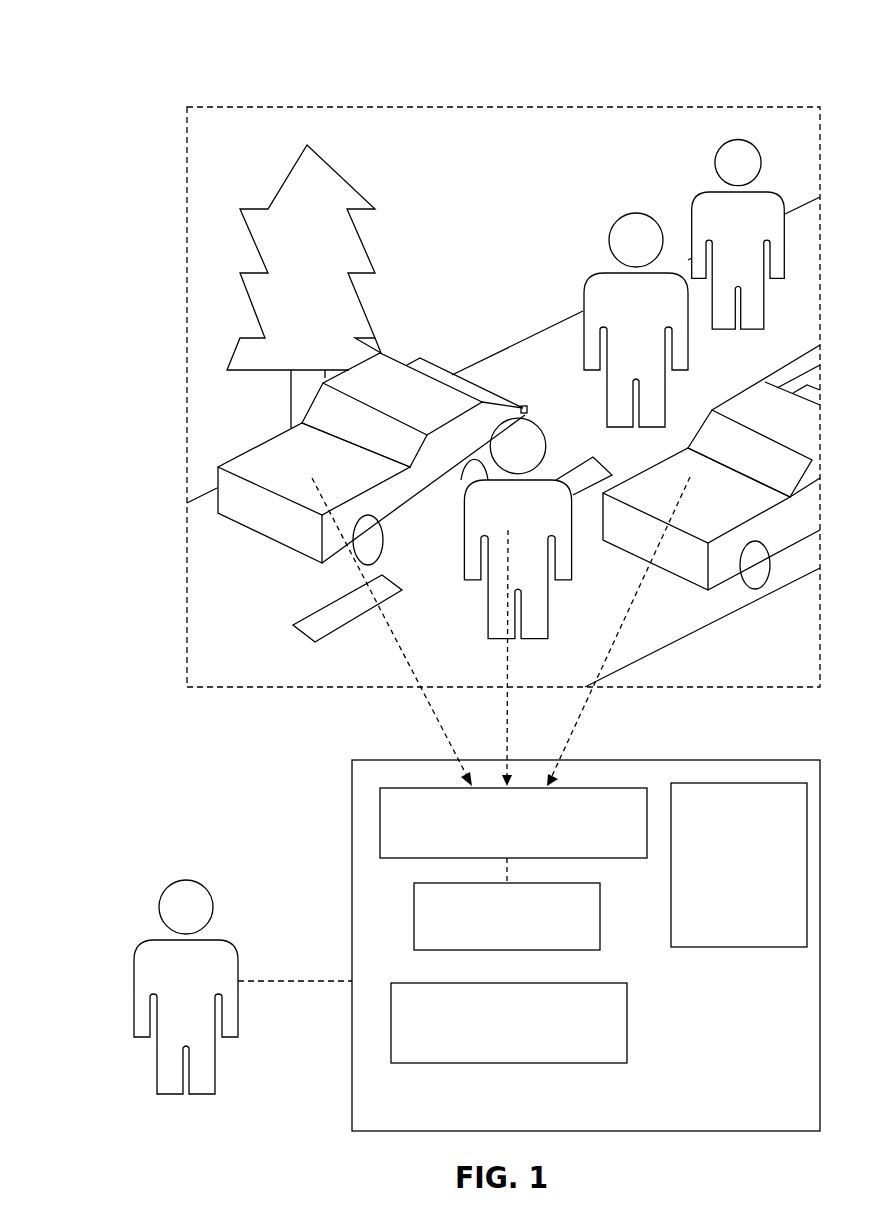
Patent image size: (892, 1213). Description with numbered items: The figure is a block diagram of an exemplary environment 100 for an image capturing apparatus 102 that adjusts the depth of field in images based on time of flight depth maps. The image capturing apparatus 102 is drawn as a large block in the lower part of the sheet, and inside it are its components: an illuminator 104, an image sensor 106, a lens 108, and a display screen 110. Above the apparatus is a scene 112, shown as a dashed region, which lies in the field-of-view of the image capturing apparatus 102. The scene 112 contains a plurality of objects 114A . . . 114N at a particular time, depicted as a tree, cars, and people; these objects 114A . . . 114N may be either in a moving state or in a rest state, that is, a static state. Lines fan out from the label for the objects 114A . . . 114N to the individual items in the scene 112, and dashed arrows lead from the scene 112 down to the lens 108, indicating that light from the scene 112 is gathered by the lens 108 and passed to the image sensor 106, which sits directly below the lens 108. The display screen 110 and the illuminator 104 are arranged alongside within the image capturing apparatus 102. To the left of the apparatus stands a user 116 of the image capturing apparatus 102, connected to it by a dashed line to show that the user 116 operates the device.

The environment 100 is at (104, 65).
The image capturing apparatus 102 is at (737, 1124).
The illuminator 104 is at (757, 892).
The image sensor 106 is at (589, 929).
The lens 108 is at (555, 837).
The display screen 110 is at (598, 1036).
The scene 112 is at (186, 120).
The object 114A is at (528, 447).
The object 114N is at (772, 407).
The user 116 is at (148, 952).